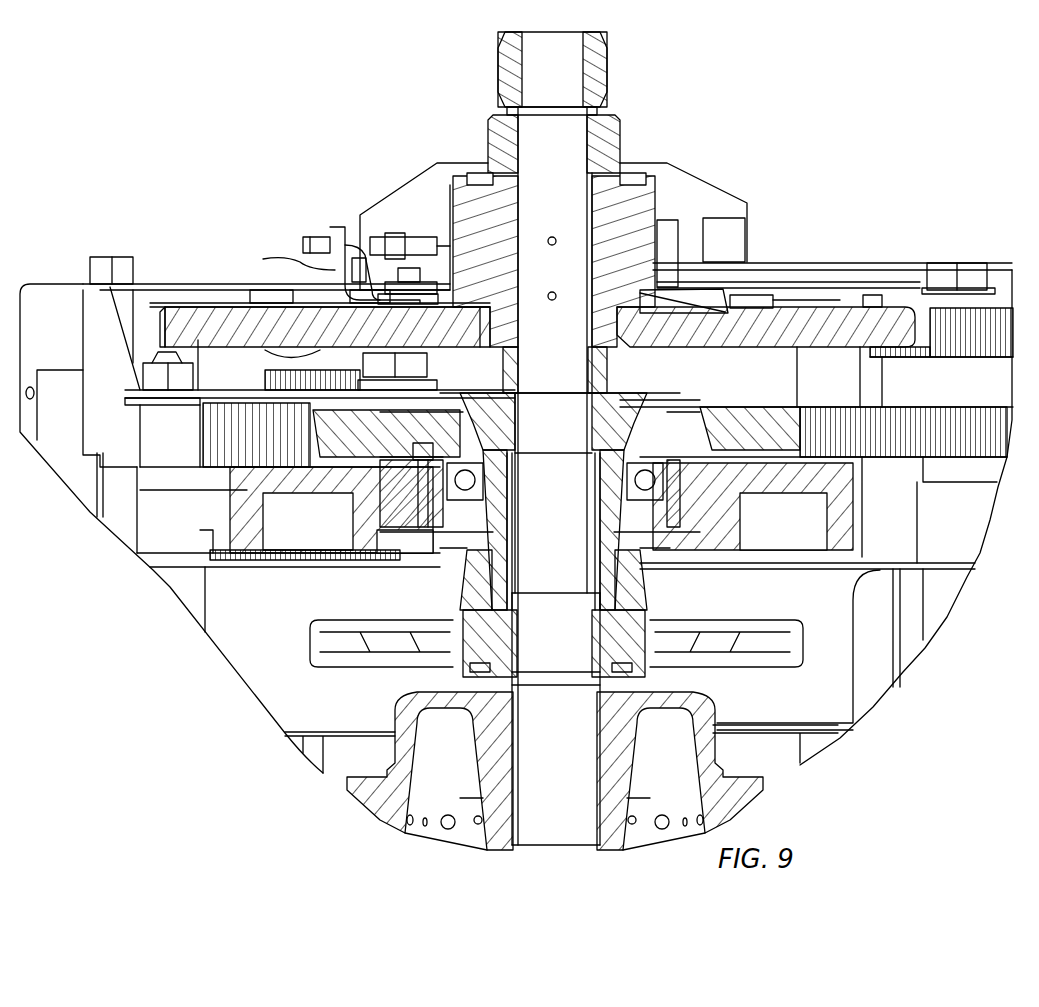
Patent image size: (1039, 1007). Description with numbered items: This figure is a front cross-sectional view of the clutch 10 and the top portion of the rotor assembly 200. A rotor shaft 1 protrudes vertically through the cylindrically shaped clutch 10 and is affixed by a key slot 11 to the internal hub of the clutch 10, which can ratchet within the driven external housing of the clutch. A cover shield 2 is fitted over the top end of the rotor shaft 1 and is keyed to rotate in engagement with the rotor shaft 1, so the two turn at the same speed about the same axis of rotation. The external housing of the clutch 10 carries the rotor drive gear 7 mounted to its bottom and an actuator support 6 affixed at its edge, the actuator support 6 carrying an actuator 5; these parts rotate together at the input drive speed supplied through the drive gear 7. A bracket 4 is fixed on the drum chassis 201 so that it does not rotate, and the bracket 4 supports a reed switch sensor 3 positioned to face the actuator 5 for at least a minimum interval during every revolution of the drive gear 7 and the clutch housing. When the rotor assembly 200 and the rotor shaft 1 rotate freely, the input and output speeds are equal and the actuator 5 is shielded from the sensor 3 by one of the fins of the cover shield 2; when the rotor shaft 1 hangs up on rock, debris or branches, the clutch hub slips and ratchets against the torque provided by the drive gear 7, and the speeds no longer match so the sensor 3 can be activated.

The rotor shaft 1 is at (544, 51).
The key slot 11 is at (604, 140).
The cover shield 2 is at (708, 172).
The clutch 10 is at (465, 208).
The reed switch sensor 3 is at (302, 240).
The bracket 4 is at (286, 263).
The actuator 5 is at (382, 237).
The actuator support 6 is at (422, 292).
The drum chassis 201 is at (170, 283).
The rotor drive gear 7 is at (800, 298).
The rotor assembly 200 is at (352, 790).